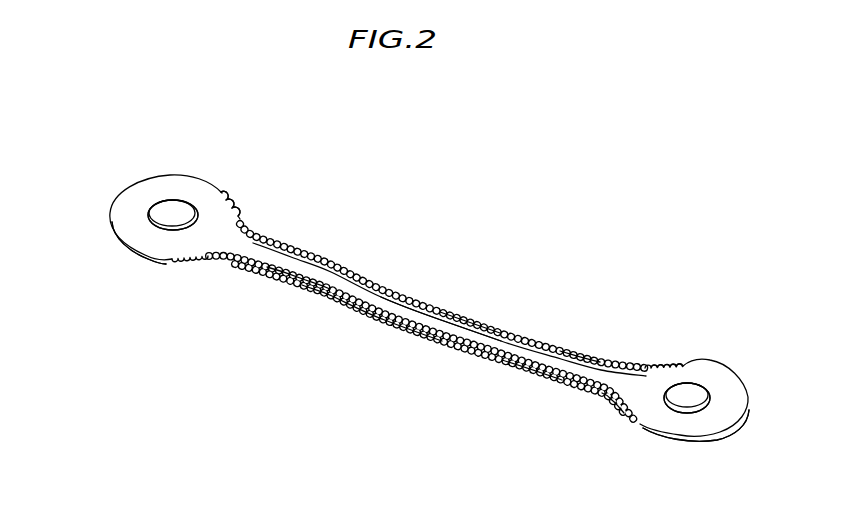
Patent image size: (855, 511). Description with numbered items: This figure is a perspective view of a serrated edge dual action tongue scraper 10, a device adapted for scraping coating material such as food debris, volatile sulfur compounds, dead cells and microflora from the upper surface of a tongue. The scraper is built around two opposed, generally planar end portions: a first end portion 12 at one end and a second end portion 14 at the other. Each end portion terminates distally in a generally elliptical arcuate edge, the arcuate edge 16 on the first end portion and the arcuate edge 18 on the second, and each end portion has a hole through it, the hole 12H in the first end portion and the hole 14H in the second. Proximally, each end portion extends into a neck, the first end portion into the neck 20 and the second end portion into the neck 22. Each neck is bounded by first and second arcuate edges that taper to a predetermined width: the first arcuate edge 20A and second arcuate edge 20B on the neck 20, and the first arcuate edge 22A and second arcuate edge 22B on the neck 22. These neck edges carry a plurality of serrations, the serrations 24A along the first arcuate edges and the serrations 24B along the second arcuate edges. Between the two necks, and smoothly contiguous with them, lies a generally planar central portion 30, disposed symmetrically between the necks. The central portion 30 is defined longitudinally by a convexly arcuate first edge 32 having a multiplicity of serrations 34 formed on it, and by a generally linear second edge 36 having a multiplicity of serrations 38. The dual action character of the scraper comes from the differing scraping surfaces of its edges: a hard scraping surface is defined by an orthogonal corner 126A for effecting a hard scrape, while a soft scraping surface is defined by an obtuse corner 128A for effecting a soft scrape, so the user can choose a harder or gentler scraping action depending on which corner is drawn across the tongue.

The serrated edge dual action tongue scraper 10 is at (431, 212).
The first end portion 12 is at (125, 183).
The hole 12H is at (172, 216).
The second end portion 14 is at (730, 371).
The hole 14H is at (687, 397).
The arcuate edge 16 is at (111, 219).
The arcuate edge 18 is at (746, 393).
The neck 20 is at (236, 196).
The first arcuate edge 20A is at (238, 217).
The second arcuate edge 20B is at (190, 262).
The neck 22 is at (646, 365).
The first arcuate edge 22A is at (662, 368).
The second arcuate edge 22B is at (620, 410).
The serrations 24A is at (256, 234).
The serrations 24B is at (204, 261).
The central portion 30 is at (406, 290).
The first edge 32 is at (332, 303).
The serrations 34 is at (427, 340).
The second edge 36 is at (473, 320).
The serrations 38 is at (550, 345).
The orthogonal corner 126A is at (297, 285).
The obtuse corner 128A is at (495, 362).